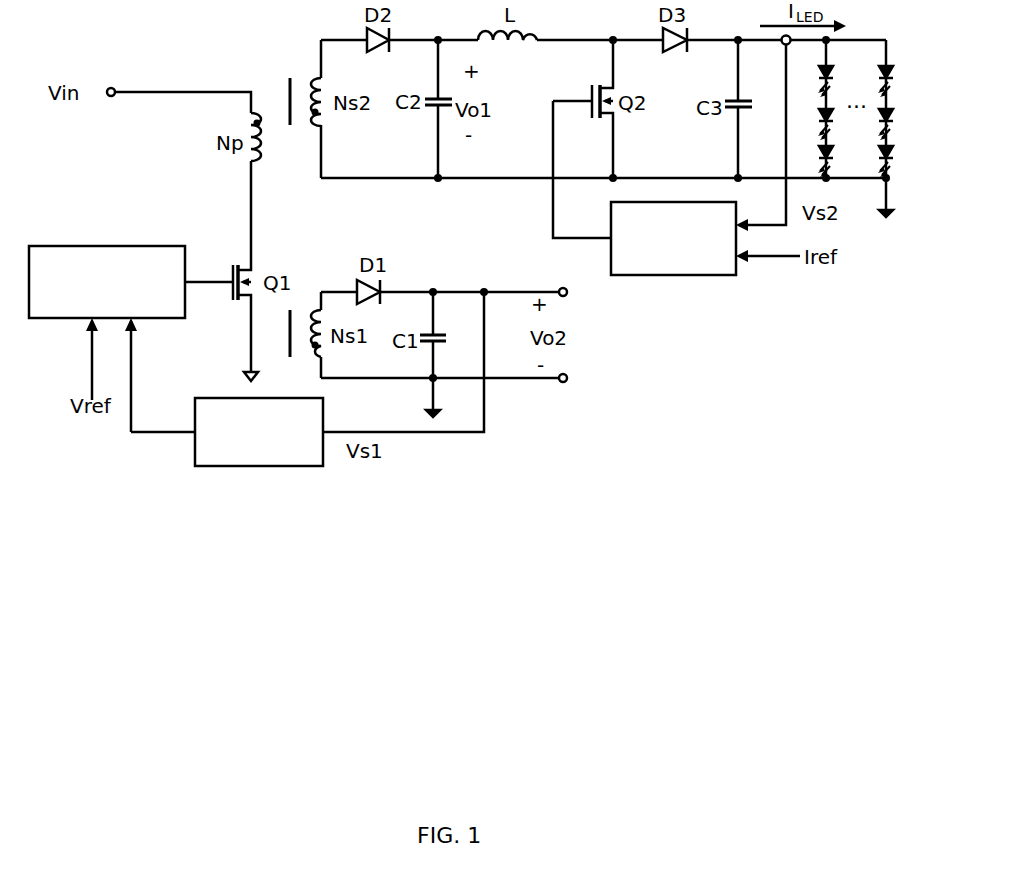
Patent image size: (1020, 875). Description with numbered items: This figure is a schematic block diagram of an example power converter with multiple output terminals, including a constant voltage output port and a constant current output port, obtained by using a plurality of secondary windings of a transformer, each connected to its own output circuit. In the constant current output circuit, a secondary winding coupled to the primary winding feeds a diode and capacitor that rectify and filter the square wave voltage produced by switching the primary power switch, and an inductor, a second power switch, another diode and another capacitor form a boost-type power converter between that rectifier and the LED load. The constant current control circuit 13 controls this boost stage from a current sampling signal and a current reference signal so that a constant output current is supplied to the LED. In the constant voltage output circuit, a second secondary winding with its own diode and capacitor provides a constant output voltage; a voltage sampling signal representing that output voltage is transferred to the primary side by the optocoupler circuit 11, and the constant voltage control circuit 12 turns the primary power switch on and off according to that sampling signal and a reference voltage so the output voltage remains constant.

The optocoupler circuit 11 is at (259, 432).
The constant voltage control circuit 12 is at (107, 282).
The constant current control circuit 13 is at (673, 238).